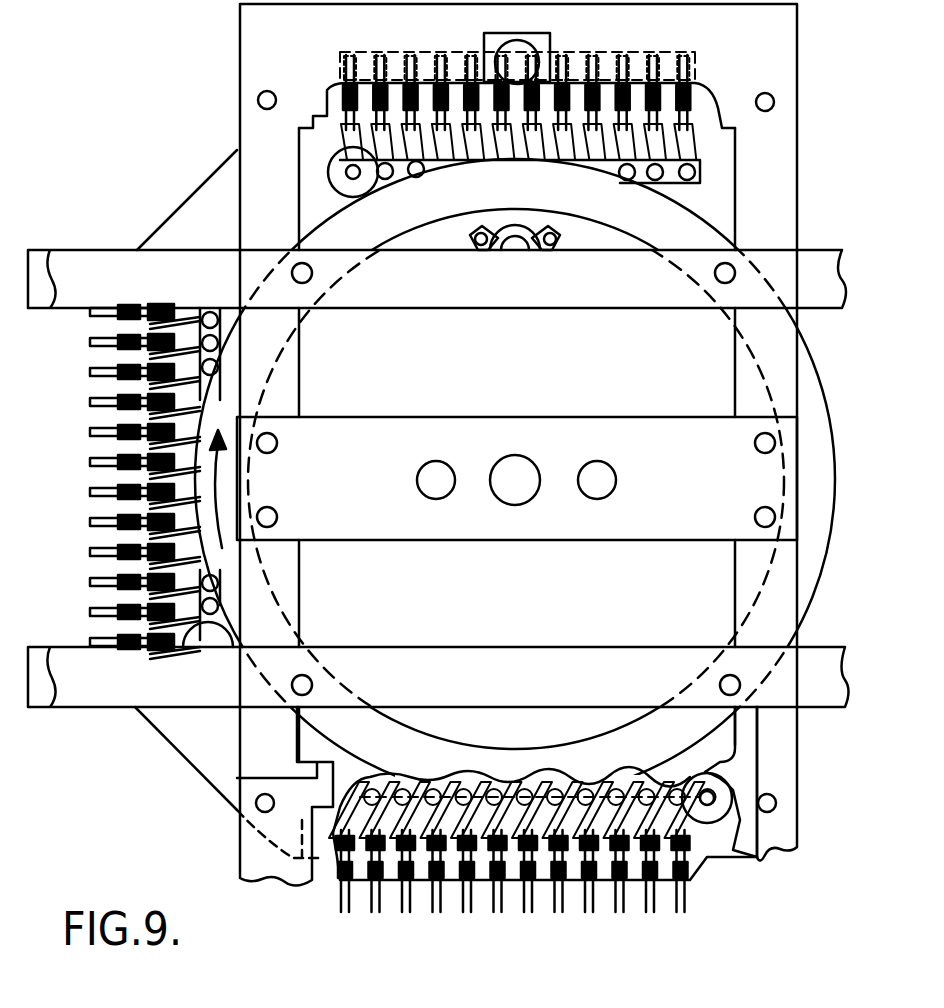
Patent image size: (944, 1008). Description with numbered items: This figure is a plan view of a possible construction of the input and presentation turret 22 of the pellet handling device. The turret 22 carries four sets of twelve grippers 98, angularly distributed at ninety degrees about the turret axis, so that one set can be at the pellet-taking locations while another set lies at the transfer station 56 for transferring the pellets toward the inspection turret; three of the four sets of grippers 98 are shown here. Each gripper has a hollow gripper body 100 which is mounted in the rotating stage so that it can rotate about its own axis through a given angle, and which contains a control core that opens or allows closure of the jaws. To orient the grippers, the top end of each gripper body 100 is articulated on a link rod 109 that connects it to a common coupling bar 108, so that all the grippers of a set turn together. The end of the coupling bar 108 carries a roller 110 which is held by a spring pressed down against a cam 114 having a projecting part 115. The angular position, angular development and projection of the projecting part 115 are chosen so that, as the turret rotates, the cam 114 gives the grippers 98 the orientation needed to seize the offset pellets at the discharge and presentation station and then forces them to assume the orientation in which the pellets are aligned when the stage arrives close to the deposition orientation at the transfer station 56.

The input and presentation turret 22 is at (812, 146).
The transfer station 56 is at (327, 920).
The grippers 98 is at (74, 454).
The gripper body 100 is at (597, 908).
The common coupling bar 108 is at (483, 790).
The link rod 109 is at (688, 822).
The roller 110 is at (337, 176).
The cam 114 is at (733, 756).
The projecting part 115 is at (732, 757).